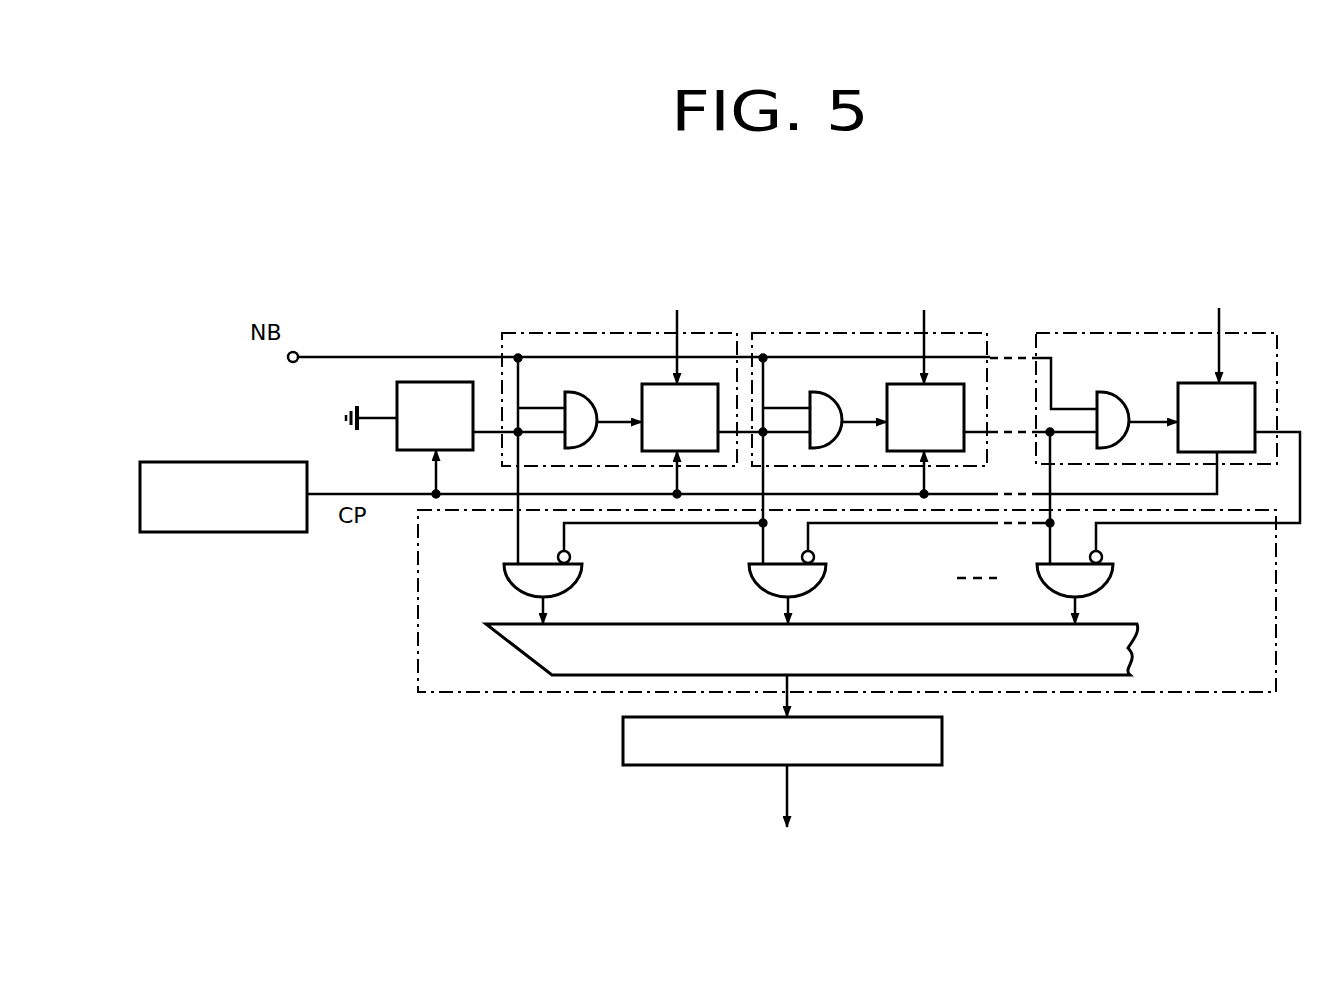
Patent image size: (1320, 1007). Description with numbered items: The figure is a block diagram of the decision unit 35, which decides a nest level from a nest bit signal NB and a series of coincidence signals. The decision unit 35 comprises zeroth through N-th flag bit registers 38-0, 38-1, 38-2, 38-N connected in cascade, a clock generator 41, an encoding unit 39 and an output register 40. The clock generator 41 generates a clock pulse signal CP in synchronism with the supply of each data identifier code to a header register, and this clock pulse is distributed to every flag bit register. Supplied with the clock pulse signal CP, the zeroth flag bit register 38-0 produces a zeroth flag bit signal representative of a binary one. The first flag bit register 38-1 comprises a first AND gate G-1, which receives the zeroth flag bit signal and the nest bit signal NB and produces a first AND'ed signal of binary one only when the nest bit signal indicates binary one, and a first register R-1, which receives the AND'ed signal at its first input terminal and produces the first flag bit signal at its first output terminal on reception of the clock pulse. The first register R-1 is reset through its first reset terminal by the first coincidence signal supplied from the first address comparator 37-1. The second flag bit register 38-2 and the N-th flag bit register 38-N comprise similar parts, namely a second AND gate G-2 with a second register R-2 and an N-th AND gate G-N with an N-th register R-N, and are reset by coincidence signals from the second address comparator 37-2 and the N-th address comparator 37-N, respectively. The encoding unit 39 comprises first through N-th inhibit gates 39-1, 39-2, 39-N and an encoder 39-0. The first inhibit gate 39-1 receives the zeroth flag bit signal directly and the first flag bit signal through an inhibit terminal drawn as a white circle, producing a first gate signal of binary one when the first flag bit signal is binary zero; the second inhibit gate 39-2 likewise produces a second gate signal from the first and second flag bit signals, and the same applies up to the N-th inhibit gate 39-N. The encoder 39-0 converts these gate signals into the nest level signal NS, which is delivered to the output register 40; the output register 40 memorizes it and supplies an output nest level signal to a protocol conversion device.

The decision unit 35 is at (298, 708).
The zeroth flag bit register 38-0 is at (433, 382).
The first flag bit register 38-1 is at (619, 359).
The second flag bit register 38-2 is at (869, 359).
The N-th flag bit register 38-N is at (1156, 358).
The first address comparator 37-1 is at (684, 318).
The second address comparator 37-2 is at (929, 318).
The N-th address comparator 37-N is at (1222, 317).
The first AND gate G-1 is at (566, 401).
The second AND gate G-2 is at (810, 401).
The N-th AND gate G-N is at (1110, 393).
The first register R-1 is at (642, 410).
The second register R-2 is at (887, 410).
The N-th register R-N is at (1200, 383).
The encoding unit 39 is at (847, 685).
The first inhibit gate 39-1 is at (582, 577).
The second inhibit gate 39-2 is at (826, 577).
The N-th inhibit gate 39-N is at (1113, 577).
The encoder 39-0 is at (1138, 650).
The output register 40 is at (942, 735).
The clock generator 41 is at (207, 533).